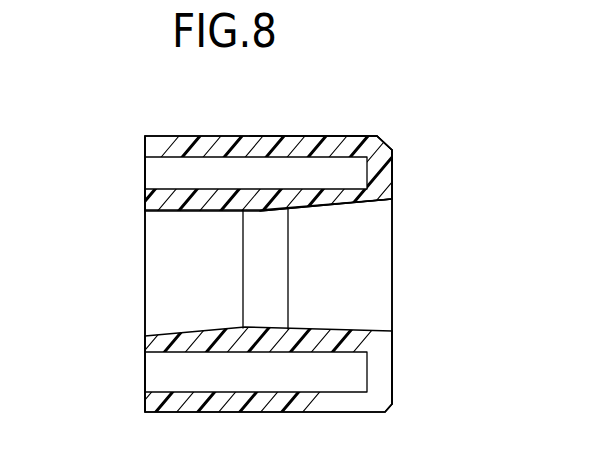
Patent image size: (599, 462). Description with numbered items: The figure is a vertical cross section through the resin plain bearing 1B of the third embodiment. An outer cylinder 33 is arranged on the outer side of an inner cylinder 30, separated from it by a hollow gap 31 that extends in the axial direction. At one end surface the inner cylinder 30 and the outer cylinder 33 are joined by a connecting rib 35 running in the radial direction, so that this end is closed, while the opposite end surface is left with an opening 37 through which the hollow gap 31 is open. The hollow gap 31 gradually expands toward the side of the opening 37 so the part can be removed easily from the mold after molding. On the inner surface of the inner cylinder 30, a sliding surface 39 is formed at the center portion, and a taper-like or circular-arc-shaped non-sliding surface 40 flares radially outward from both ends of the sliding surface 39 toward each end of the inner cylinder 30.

The plain bearing 1B is at (405, 235).
The inner cylinder 30 is at (170, 210).
The hollow gap 31 is at (317, 175).
The outer cylinder 33 is at (218, 145).
The connecting rib 35 is at (378, 173).
The opening 37 is at (165, 177).
The sliding surface 39 is at (272, 327).
The non-sliding surface 40 is at (202, 330).